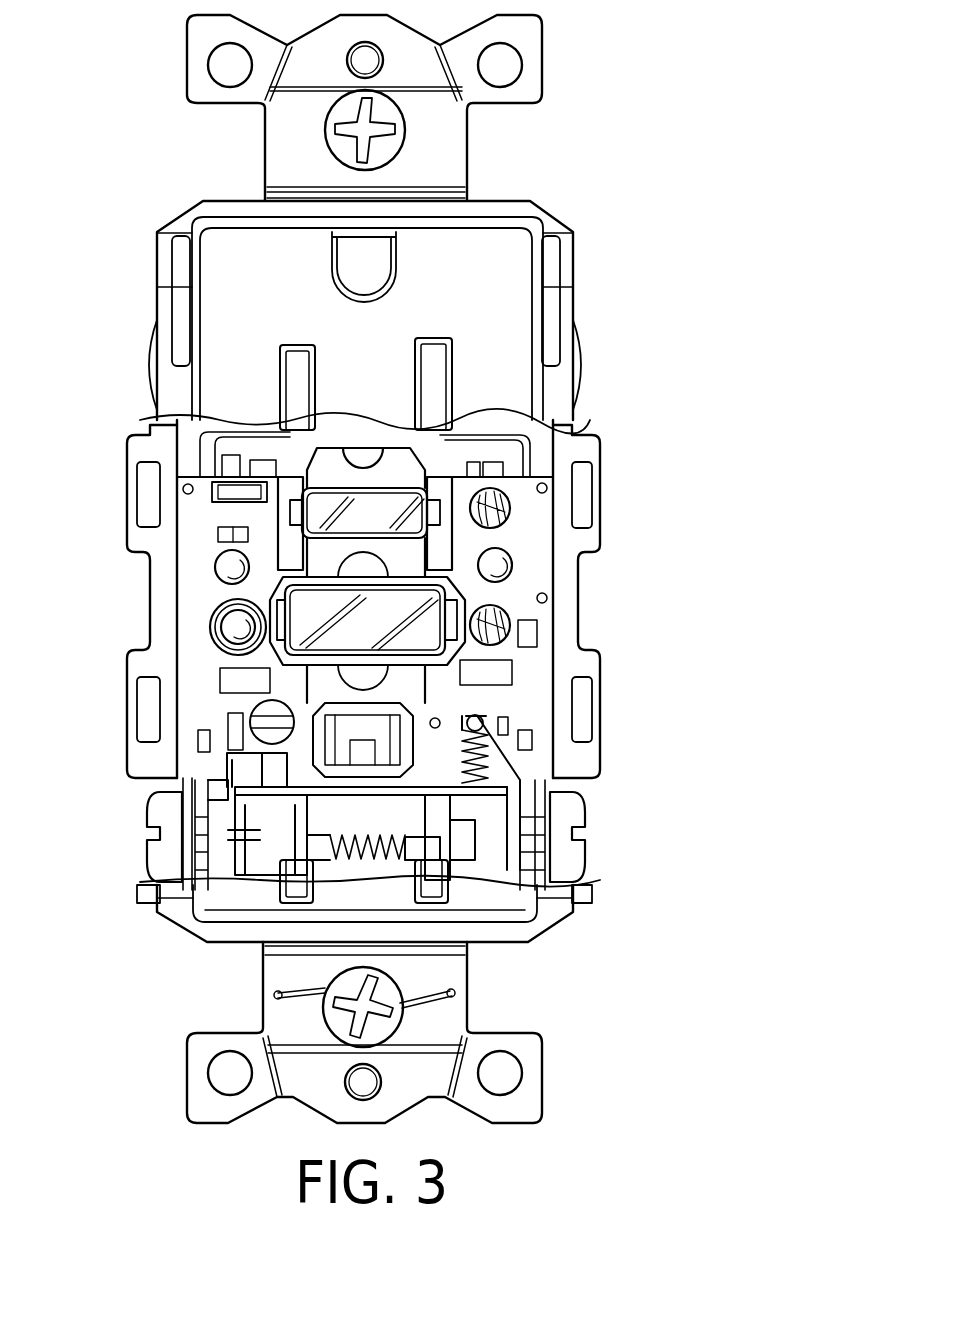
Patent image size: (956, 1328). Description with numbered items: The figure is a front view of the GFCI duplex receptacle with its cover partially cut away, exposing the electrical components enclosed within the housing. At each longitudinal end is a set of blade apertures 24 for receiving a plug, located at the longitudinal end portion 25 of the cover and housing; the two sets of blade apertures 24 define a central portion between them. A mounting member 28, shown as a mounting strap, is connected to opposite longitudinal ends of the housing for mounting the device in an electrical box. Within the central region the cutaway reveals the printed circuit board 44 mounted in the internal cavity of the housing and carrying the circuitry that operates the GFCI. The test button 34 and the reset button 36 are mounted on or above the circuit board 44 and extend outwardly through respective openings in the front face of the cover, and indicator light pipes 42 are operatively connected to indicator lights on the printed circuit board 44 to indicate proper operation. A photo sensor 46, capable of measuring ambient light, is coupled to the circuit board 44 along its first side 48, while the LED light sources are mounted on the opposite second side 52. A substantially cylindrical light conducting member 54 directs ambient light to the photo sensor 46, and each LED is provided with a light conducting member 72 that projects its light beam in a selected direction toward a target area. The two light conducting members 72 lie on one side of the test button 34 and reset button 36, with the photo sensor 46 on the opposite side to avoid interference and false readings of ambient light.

The blade apertures 24 is at (425, 360).
The longitudinal end portion 25 is at (488, 277).
The mounting member 28 is at (433, 140).
The test button 34 is at (375, 600).
The reset button 36 is at (345, 508).
The indicator light pipes 42 is at (215, 572).
The printed circuit board 44 is at (202, 548).
The photo sensor 46 is at (236, 626).
The first side 48 is at (130, 660).
The second side 52 is at (555, 663).
The light conducting member 54 is at (212, 637).
The light conducting members 72 is at (510, 508).